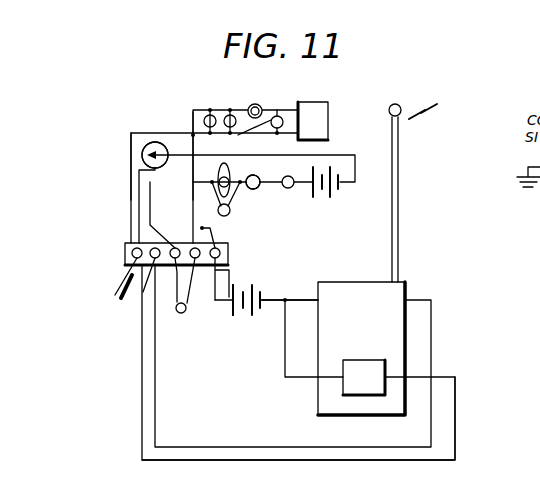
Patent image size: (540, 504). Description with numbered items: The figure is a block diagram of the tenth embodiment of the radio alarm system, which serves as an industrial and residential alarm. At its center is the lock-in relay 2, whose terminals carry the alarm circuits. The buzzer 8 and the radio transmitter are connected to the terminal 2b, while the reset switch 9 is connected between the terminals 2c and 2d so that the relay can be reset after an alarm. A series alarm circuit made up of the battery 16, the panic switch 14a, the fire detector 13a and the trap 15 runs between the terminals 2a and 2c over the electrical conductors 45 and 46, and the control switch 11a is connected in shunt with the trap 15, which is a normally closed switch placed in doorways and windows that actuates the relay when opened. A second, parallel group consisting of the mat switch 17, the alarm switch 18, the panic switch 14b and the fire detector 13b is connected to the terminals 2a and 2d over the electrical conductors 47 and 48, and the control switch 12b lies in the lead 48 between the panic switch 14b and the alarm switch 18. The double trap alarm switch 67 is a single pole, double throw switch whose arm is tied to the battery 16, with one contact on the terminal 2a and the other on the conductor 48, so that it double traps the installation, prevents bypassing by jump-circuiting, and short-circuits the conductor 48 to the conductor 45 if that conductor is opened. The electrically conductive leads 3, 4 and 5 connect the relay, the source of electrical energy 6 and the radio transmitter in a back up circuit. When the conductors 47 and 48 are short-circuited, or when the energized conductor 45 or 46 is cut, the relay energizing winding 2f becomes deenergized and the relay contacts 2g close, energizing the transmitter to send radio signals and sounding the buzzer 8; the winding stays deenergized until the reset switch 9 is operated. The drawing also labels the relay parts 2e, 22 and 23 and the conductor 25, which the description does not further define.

The fire detector 13b is at (210, 110).
The panic switch 14b is at (226, 110).
The control switch 12b is at (248, 108).
The double trap alarm switch 67 is at (144, 147).
The electrical conductor 47 is at (124, 158).
The electrical conductor 48 is at (193, 123).
The mat switch 17 is at (322, 113).
The alarm switch 18 is at (239, 135).
The electrical conductor 46 is at (164, 161).
The electrical conductor 45 is at (214, 179).
The trap 15 is at (227, 170).
The battery 16 is at (338, 160).
The panic switch 14a is at (284, 188).
The fire detector 13a is at (255, 190).
The control switch 11a is at (228, 216).
The relay contacts 2g is at (197, 248).
The lock-in relay 2 is at (127, 250).
The relay terminal 2b is at (156, 247).
The relay terminal 2c is at (162, 215).
The relay terminal 2a is at (122, 277).
The relay energizing winding 2f is at (120, 298).
The conductor 22 is at (168, 280).
The relay terminal 2d is at (198, 280).
The reset switch 9 is at (178, 313).
The relay contact 2e is at (224, 279).
The electrically conductive lead 3 is at (224, 300).
The source of electrical energy 6 is at (245, 318).
The conductor 23 is at (272, 302).
The electrically conductive lead 4 is at (305, 302).
The buzzer 8 is at (345, 383).
The electrically conductive lead 5 is at (190, 432).
The conductor 25 is at (455, 453).